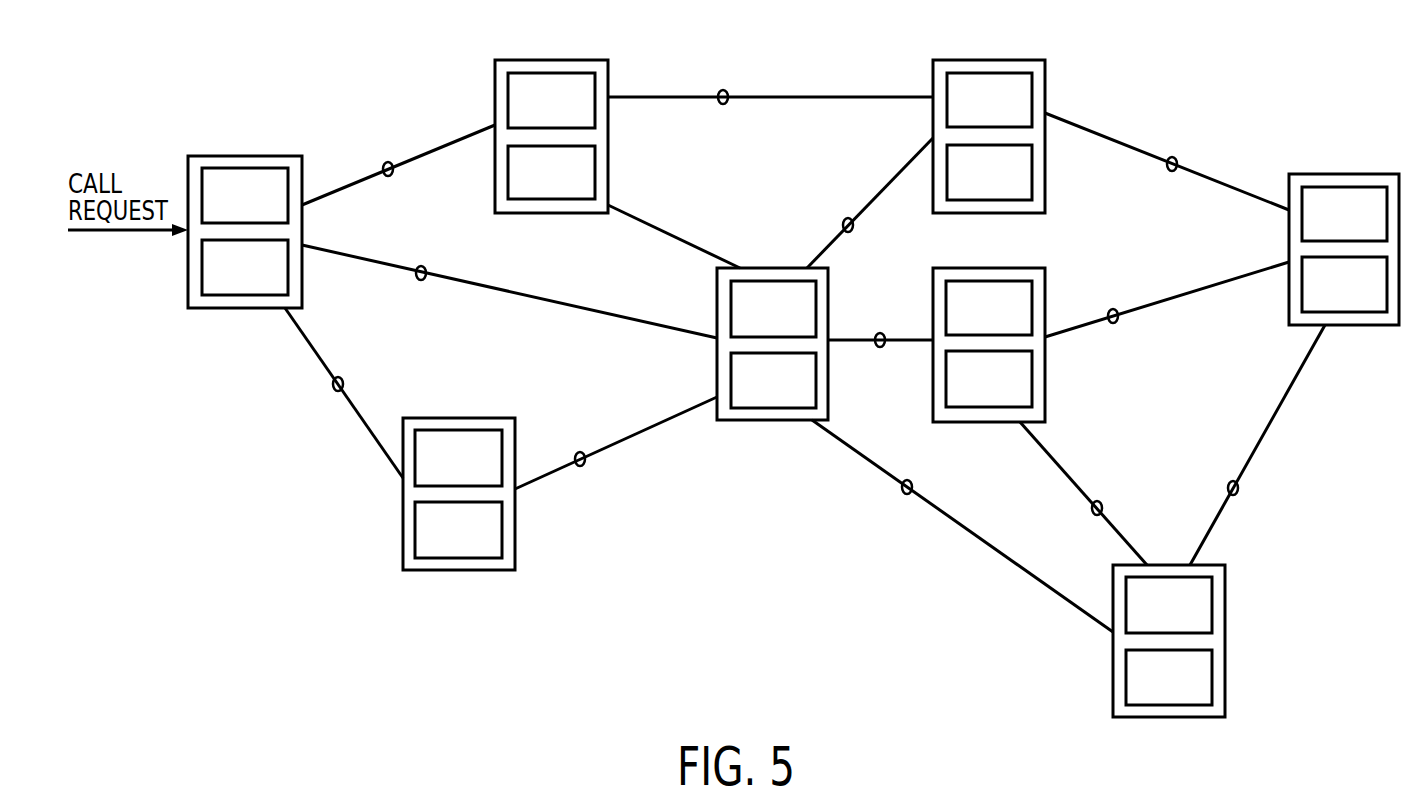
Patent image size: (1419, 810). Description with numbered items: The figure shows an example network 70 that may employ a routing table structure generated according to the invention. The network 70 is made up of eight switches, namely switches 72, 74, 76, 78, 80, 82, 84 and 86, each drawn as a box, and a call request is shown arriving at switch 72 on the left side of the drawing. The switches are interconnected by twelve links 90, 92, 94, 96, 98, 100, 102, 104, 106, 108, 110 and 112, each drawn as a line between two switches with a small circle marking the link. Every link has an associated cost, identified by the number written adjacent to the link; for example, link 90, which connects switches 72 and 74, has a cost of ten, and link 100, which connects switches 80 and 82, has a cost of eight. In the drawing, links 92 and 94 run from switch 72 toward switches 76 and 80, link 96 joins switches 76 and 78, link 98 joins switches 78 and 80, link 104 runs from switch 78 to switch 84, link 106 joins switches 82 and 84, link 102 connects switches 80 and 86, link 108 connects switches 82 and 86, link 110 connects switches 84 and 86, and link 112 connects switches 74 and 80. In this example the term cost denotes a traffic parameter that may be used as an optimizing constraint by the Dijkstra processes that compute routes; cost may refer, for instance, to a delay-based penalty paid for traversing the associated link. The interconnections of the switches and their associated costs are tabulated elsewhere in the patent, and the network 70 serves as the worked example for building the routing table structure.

The network 70 is at (630, 606).
The switch 72 is at (247, 310).
The switch 74 is at (506, 572).
The switch 76 is at (510, 215).
The switch 78 is at (1020, 58).
The switch 80 is at (734, 422).
The switch 82 is at (963, 424).
The switch 84 is at (1372, 327).
The switch 86 is at (1210, 719).
The link 90 is at (345, 381).
The link 92 is at (392, 176).
The link 94 is at (426, 284).
The link 96 is at (727, 106).
The link 98 is at (852, 233).
The link 100 is at (884, 349).
The link 102 is at (901, 490).
The link 104 is at (1179, 164).
The link 106 is at (1117, 325).
The link 108 is at (1090, 510).
The link 110 is at (1237, 498).
The link 112 is at (585, 468).